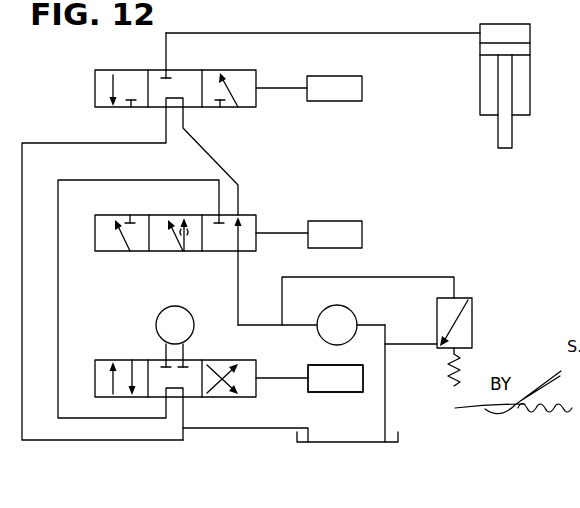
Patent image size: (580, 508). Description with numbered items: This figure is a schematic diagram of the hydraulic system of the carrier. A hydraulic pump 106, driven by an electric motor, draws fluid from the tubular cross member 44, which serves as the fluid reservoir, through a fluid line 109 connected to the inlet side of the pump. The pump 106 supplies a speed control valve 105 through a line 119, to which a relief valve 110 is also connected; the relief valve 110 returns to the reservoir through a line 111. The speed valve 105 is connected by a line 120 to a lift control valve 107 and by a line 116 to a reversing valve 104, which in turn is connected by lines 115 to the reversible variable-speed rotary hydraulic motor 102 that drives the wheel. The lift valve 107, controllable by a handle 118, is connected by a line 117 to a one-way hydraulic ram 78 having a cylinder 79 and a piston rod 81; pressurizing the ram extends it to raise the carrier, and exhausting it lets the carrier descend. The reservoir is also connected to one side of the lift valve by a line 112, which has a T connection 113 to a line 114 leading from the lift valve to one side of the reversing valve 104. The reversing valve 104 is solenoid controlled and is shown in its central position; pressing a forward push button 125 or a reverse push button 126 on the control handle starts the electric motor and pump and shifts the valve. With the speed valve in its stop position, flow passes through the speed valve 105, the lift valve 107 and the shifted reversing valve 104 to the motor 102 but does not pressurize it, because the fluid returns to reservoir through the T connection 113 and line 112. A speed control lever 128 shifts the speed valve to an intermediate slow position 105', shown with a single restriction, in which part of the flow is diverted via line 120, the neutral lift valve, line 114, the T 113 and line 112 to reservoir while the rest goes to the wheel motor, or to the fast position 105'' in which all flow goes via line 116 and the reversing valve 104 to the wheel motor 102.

The lift control valve 107 is at (104, 70).
The line 117 is at (394, 18).
The handle 118 is at (352, 76).
The hydraulic ram 78 is at (530, 82).
The cylinder 79 is at (530, 108).
The piston rod 81 is at (512, 138).
The line 120 is at (224, 163).
The line 116 is at (92, 180).
The speed control valve 105 is at (195, 232).
The intermediate (slow) position of speed valve 105' is at (170, 251).
The fast position of speed valve 105'' is at (108, 216).
The speed control lever 128 is at (358, 205).
The line 119 is at (238, 304).
The line 111 is at (422, 277).
The hydraulic pump 106 is at (346, 298).
The relief valve 110 is at (472, 300).
The rotary hydraulic motor 102 is at (156, 318).
The lines 115 is at (190, 350).
The reversing valve 104 is at (100, 360).
The forward push button 125 is at (357, 392).
The reverse push button 126 is at (350, 404).
The fluid line 109 is at (385, 407).
The cross member 44 is at (398, 441).
The line 112 is at (243, 428).
The T connection 113 is at (184, 432).
The line 114 is at (72, 440).